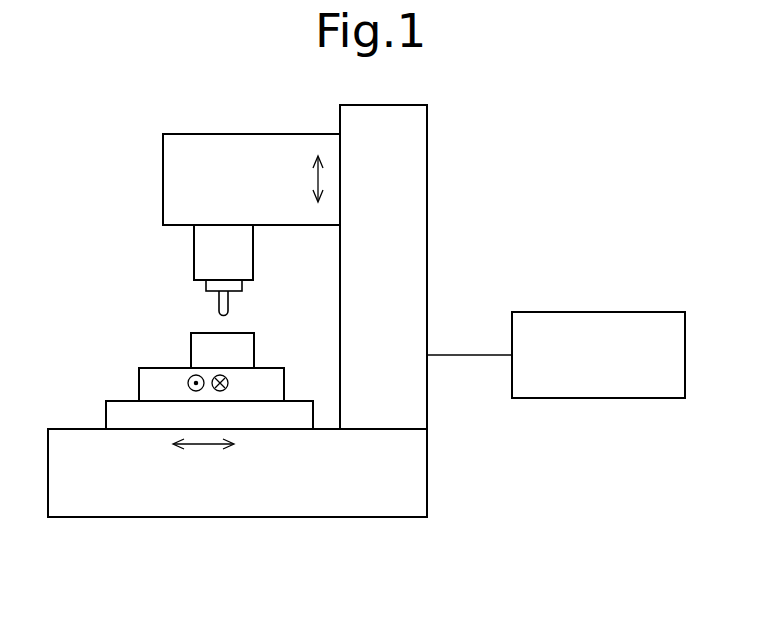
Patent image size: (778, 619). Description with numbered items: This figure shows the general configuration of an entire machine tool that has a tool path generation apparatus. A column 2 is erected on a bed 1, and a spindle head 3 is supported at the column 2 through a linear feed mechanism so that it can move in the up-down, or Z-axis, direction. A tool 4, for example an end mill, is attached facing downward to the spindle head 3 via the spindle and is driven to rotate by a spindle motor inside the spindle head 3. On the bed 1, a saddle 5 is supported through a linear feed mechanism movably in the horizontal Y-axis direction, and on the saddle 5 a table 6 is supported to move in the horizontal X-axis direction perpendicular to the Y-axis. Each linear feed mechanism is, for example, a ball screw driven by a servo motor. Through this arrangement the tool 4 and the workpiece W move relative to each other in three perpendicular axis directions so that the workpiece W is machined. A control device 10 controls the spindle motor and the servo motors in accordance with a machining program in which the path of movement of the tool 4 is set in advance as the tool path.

The bed 1 is at (146, 517).
The column 2 is at (427, 170).
The spindle head 3 is at (163, 155).
The tool 4 is at (217, 302).
The saddle 5 is at (106, 412).
The table 6 is at (139, 383).
The control device 10 is at (570, 398).
The workpiece W is at (191, 345).